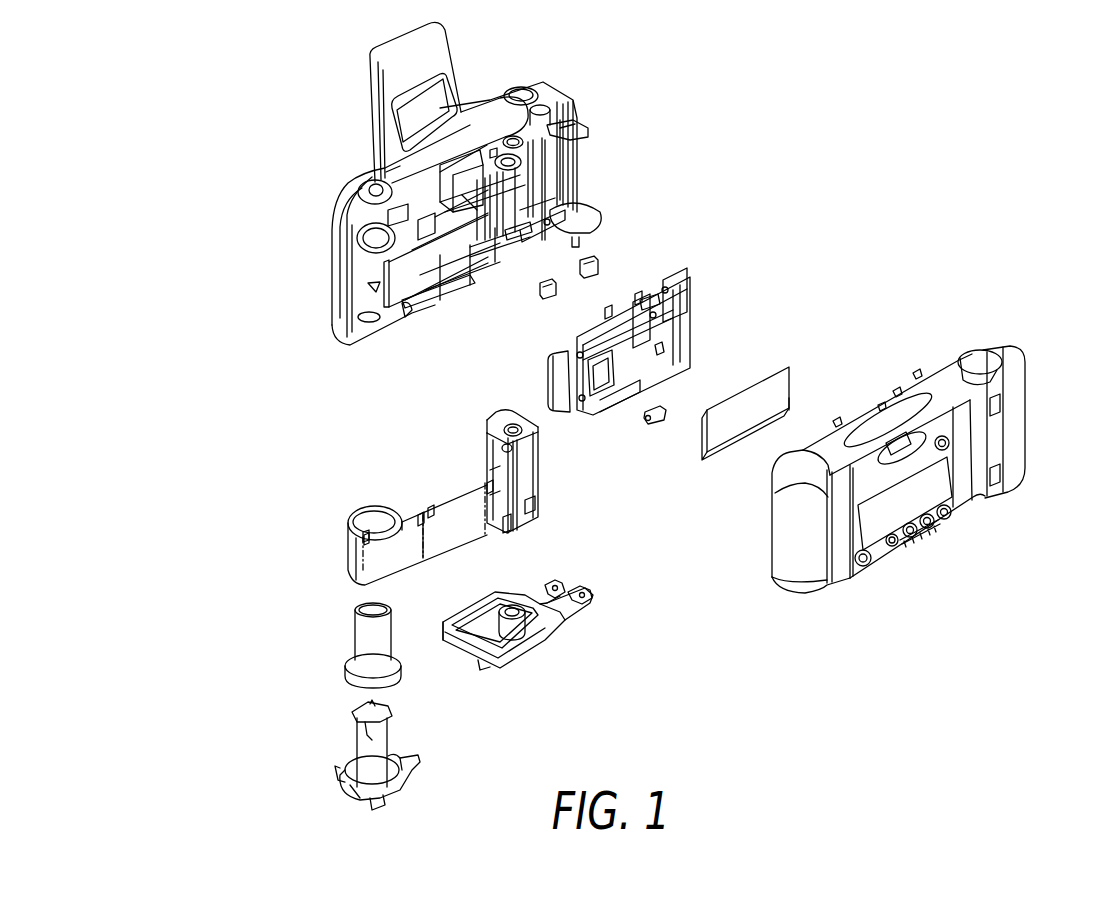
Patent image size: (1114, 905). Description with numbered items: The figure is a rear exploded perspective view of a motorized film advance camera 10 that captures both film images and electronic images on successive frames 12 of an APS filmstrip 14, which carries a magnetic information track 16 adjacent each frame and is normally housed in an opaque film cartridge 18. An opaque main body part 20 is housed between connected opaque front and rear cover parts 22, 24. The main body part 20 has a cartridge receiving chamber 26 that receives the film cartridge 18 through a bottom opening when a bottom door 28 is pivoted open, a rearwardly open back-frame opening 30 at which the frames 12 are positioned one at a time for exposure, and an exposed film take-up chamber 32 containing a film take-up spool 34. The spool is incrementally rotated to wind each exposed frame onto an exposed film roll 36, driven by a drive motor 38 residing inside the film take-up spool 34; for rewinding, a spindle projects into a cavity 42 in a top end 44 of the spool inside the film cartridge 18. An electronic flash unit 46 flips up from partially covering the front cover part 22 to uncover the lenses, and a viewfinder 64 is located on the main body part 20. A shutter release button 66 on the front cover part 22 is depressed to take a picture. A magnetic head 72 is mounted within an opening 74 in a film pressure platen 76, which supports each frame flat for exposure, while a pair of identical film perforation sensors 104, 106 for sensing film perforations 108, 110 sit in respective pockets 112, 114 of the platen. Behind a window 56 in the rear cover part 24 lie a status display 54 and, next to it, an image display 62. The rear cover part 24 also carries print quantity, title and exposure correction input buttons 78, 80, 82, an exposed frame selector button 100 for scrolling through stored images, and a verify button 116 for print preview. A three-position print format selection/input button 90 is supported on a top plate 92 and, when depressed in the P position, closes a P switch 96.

The motorized film advance camera 10 is at (217, 147).
The frames 12 is at (473, 443).
The filmstrip 14 is at (434, 562).
The magnetic information track 16 is at (394, 578).
The film cartridge 18 is at (540, 482).
The main body part 20 is at (582, 121).
The front cover part 22 is at (344, 170).
The rear cover part 24 is at (822, 594).
The cartridge receiving chamber 26 is at (470, 201).
The bottom door 28 is at (501, 668).
The back-frame opening 30 is at (483, 277).
The exposed film take-up chamber 32 is at (423, 306).
The film take-up spool 34 is at (354, 640).
The exposed film roll 36 is at (356, 510).
The drive motor 38 is at (355, 738).
The cavity 42 is at (511, 414).
The top end 44 is at (533, 428).
The electronic flash unit 46 is at (376, 55).
The status display 54 is at (796, 412).
The window 56 is at (935, 488).
The image display 62 is at (788, 364).
The viewfinder 64 is at (500, 204).
The shutter release button 66 is at (522, 85).
The magnetic head 72 is at (660, 424).
The opening 74 is at (598, 380).
The film pressure platen 76 is at (682, 290).
The print quantity input button 78 is at (952, 514).
The title input button 80 is at (937, 531).
The exposure correction input button 82 is at (912, 544).
The print format selection/input button 90 is at (360, 190).
The top plate 92 is at (392, 170).
The P switch 96 is at (872, 568).
The exposed frame selector button 100 is at (897, 553).
The film perforation sensor 104 is at (592, 256).
The film perforation sensor 106 is at (546, 296).
The film perforations 108 is at (431, 508).
The film perforations 110 is at (421, 514).
The pocket 112 is at (644, 296).
The pocket 114 is at (610, 314).
The verify button 116 is at (950, 442).